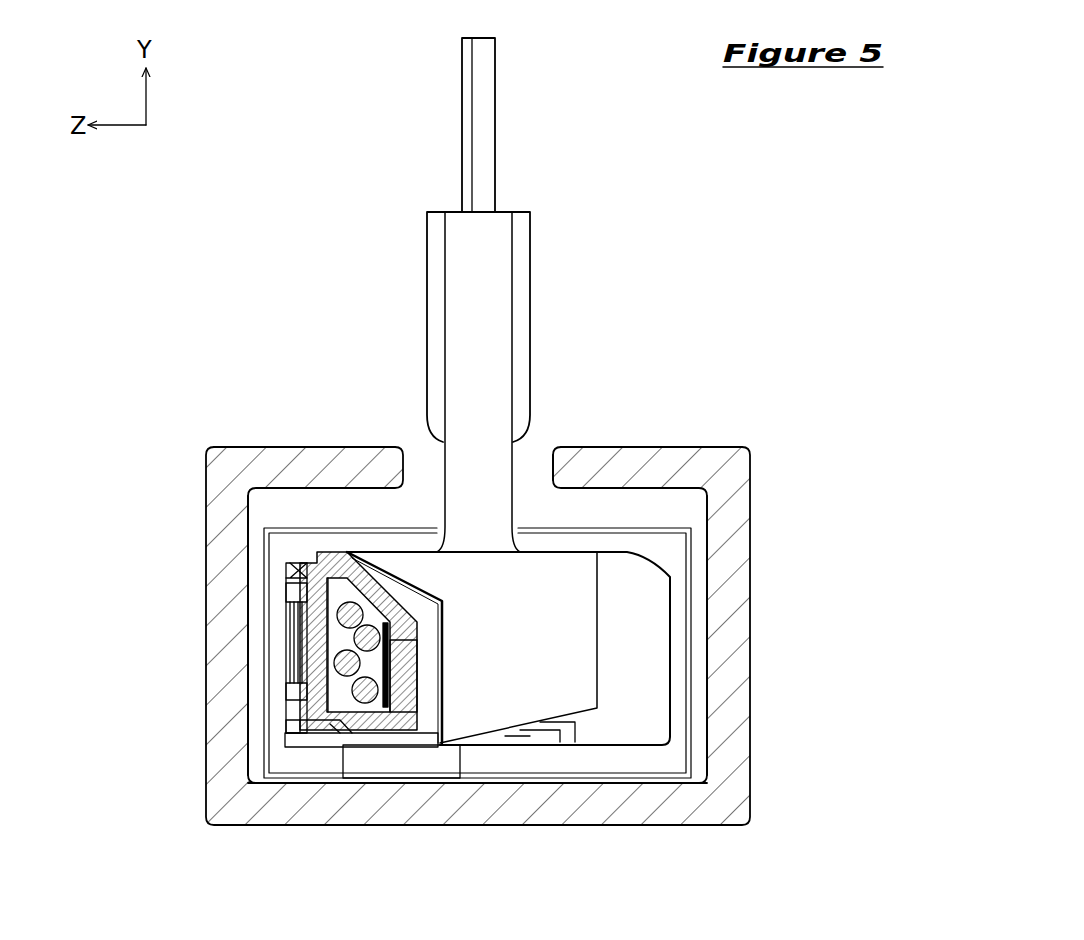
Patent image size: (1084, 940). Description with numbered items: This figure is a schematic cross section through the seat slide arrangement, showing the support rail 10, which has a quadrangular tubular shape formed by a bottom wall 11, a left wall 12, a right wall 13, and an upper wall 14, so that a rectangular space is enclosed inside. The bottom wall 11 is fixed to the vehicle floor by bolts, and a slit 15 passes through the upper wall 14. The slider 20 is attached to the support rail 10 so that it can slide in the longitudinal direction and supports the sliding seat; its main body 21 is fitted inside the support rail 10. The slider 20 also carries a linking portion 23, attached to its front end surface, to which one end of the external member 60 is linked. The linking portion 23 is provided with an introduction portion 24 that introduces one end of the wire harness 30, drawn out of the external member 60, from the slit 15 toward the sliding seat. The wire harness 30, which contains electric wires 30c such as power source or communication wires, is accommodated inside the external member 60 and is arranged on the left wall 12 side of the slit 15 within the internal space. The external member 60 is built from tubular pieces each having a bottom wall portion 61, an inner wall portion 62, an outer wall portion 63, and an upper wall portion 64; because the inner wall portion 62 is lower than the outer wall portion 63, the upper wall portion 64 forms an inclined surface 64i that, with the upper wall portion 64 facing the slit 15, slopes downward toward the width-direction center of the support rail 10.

The support rail 10 is at (752, 462).
The bottom wall 11 is at (462, 824).
The left wall 12 is at (222, 700).
The right wall 13 is at (727, 648).
The upper wall 14 is at (297, 456).
The slit 15 is at (553, 462).
The slider 20 is at (445, 382).
The main body 21 is at (652, 698).
The linking portion 23 is at (440, 628).
The introduction portion 24 is at (503, 255).
The wire harness 30 is at (487, 98).
The electric wires 30c is at (350, 735).
The external member 60 is at (288, 578).
The bottom wall portion 61 is at (378, 747).
The inner wall portion 62 is at (407, 656).
The outer wall portion 63 is at (323, 657).
The upper wall portion 64 is at (358, 532).
The inclined surface 64i is at (383, 598).